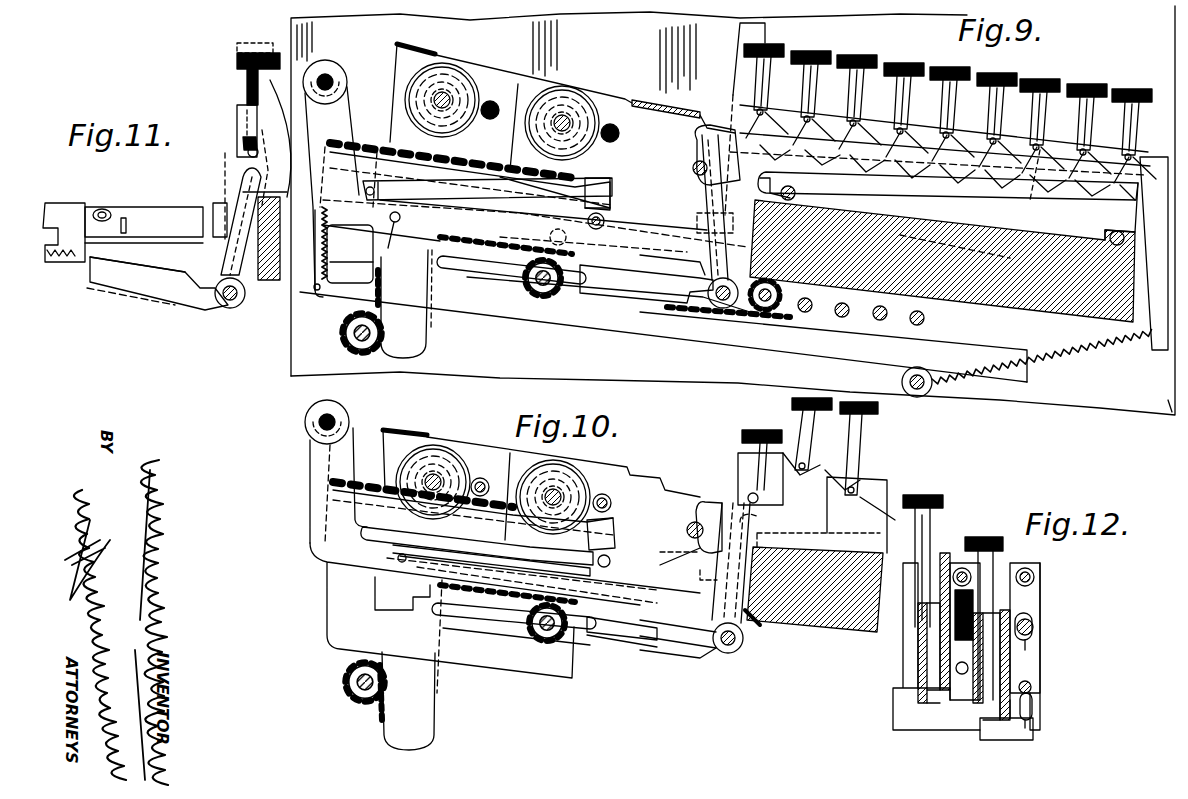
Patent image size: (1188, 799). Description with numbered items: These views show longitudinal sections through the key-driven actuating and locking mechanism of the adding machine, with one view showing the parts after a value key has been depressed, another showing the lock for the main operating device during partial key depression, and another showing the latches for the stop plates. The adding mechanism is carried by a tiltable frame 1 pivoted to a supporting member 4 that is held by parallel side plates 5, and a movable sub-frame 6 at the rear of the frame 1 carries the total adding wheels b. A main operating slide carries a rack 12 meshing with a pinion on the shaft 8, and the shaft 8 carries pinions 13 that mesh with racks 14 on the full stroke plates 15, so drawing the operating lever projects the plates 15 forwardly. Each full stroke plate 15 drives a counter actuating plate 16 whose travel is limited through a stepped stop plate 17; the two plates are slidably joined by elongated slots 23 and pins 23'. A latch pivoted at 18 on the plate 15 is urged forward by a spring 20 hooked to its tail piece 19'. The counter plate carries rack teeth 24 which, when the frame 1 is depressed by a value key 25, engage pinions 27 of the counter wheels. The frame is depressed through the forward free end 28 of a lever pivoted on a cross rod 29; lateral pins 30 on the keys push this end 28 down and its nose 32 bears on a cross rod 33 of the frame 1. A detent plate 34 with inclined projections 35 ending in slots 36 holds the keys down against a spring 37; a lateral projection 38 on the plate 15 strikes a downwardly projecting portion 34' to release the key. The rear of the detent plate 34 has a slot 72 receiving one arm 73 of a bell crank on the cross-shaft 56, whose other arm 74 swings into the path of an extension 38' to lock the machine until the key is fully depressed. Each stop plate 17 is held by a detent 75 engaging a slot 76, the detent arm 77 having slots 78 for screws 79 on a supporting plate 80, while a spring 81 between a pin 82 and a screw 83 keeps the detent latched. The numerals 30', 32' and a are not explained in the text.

In FIG. 9, the tiltable frame 1 is at (622, 100).
In FIG. 9, the supporting member 4 is at (1000, 310).
In FIG. 11, the supporting member 4 is at (264, 282).
In FIG. 10, the supporting member 4 is at (812, 626).
In FIG. 12, the supporting member 4 is at (903, 612).
In FIG. 9, the side plates 5 is at (1150, 416).
In FIG. 9, the movable sub-frame 6 is at (500, 80).
In FIG. 9, the shaft 8 is at (552, 292).
In FIG. 10, the shaft 8 is at (565, 640).
In FIG. 9, the rack 12 is at (778, 35).
In FIG. 9, the pinions 13 is at (542, 294).
In FIG. 10, the pinions 13 is at (532, 636).
In FIG. 9, the racks 14 is at (488, 272).
In FIG. 11, the racks 14 is at (48, 266).
In FIG. 10, the racks 14 is at (430, 605).
In FIG. 9, the full stroke plate 15 is at (432, 304).
In FIG. 11, the full stroke plate 15 is at (66, 200).
In FIG. 10, the full stroke plate 15 is at (380, 584).
In FIG. 9, the counter actuating plate 16 is at (614, 186).
In FIG. 10, the counter actuating plate 16 is at (362, 527).
In FIG. 9, the stop plate 17 is at (665, 272).
In FIG. 11, the stop plate 17 is at (138, 202).
In FIG. 10, the stop plate 17 is at (698, 646).
In FIG. 12, the stop plate 17 is at (925, 662).
In FIG. 9, the pivot pin 18 is at (393, 238).
In FIG. 9, the tail piece of latch 19' is at (350, 254).
In FIG. 9, the spring 20 is at (351, 271).
In FIG. 9, the elongated slots 23 is at (601, 229).
In FIG. 11, the elongated slots 23 is at (104, 203).
In FIG. 10, the elongated slots 23 is at (601, 534).
In FIG. 9, the pins 23' is at (492, 209).
In FIG. 10, the pins 23' is at (625, 542).
In FIG. 9, the rack teeth 24 is at (585, 172).
In FIG. 10, the rack teeth 24 is at (365, 485).
In FIG. 9, the value keys 25 is at (858, 57).
In FIG. 11, the value keys 25 is at (244, 86).
In FIG. 10, the value keys 25 is at (790, 405).
In FIG. 12, the value keys 25 is at (935, 528).
In FIG. 9, the pinions 27 is at (450, 70).
In FIG. 10, the pinions 27 is at (440, 452).
In FIG. 9, the forward free end of lever 28 is at (948, 186).
In FIG. 10, the forward free end of lever 28 is at (648, 642).
In FIG. 12, the forward free end of lever 28 is at (930, 627).
In FIG. 9, the cross rod 29 is at (330, 72).
In FIG. 10, the cross rod 29 is at (340, 416).
In FIG. 9, the lateral pins 30 is at (940, 125).
In FIG. 11, the lateral pins 30 is at (244, 138).
In FIG. 10, the lateral pins 30 is at (821, 463).
In FIG. 12, the lateral pins 30 is at (1005, 618).
In FIG. 9, the bar 30' is at (593, 249).
In FIG. 9, the nose 32 is at (705, 155).
In FIG. 10, the nose 32 is at (697, 519).
In FIG. 9, the arm 32' is at (973, 247).
In FIG. 9, the cross rod 33 is at (692, 165).
In FIG. 10, the cross rod 33 is at (688, 526).
In FIG. 9, the detent plate 34 is at (698, 207).
In FIG. 11, the detent plate 34 is at (222, 185).
In FIG. 10, the detent plate 34 is at (883, 514).
In FIG. 12, the detent plate 34 is at (975, 636).
In FIG. 11, the downwardly projecting portion 34' is at (212, 221).
In FIG. 10, the downwardly projecting portion 34' is at (688, 556).
In FIG. 9, the inclined projections 35 is at (947, 150).
In FIG. 11, the inclined projections 35 is at (240, 140).
In FIG. 9, the slots 36 is at (1040, 192).
In FIG. 10, the slots 36 is at (885, 492).
In FIG. 9, the spring 37 is at (1065, 362).
In FIG. 9, the lateral projection 38 is at (535, 223).
In FIG. 11, the lateral projection 38 is at (139, 230).
In FIG. 10, the lateral projection 38 is at (543, 574).
In FIG. 11, the extension 38' is at (137, 258).
In FIG. 10, the extension 38' is at (537, 590).
In FIG. 9, the cross-shaft 56 is at (722, 310).
In FIG. 11, the cross-shaft 56 is at (230, 308).
In FIG. 10, the cross-shaft 56 is at (745, 648).
In FIG. 9, the recess or slot 72 is at (719, 201).
In FIG. 10, the recess or slot 72 is at (769, 511).
In FIG. 9, the arm of bell crank lever 73 is at (546, 224).
In FIG. 9, the arm of bell crank lever 74 is at (622, 290).
In FIG. 11, the arm of bell crank lever 74 is at (128, 290).
In FIG. 10, the arm of bell crank lever 74 is at (705, 660).
In FIG. 9, the detent 75 is at (672, 262).
In FIG. 10, the detent 75 is at (742, 650).
In FIG. 12, the detent 75 is at (940, 727).
In FIG. 10, the slot 76 is at (760, 630).
In FIG. 12, the slot 76 is at (915, 702).
In FIG. 12, the arm 77 is at (1035, 642).
In FIG. 12, the slots 78 is at (1035, 650).
In FIG. 12, the screws 79 is at (1035, 627).
In FIG. 12, the supporting plate 80 is at (1040, 610).
In FIG. 12, the spring 81 is at (930, 712).
In FIG. 12, the pin 82 is at (1035, 692).
In FIG. 12, the screw 83 is at (1036, 576).
In FIG. 9, the stud a is at (618, 126).
In FIG. 10, the stud a is at (598, 488).
In FIG. 9, the total adding wheels b is at (486, 124).
In FIG. 10, the total adding wheels b is at (472, 478).